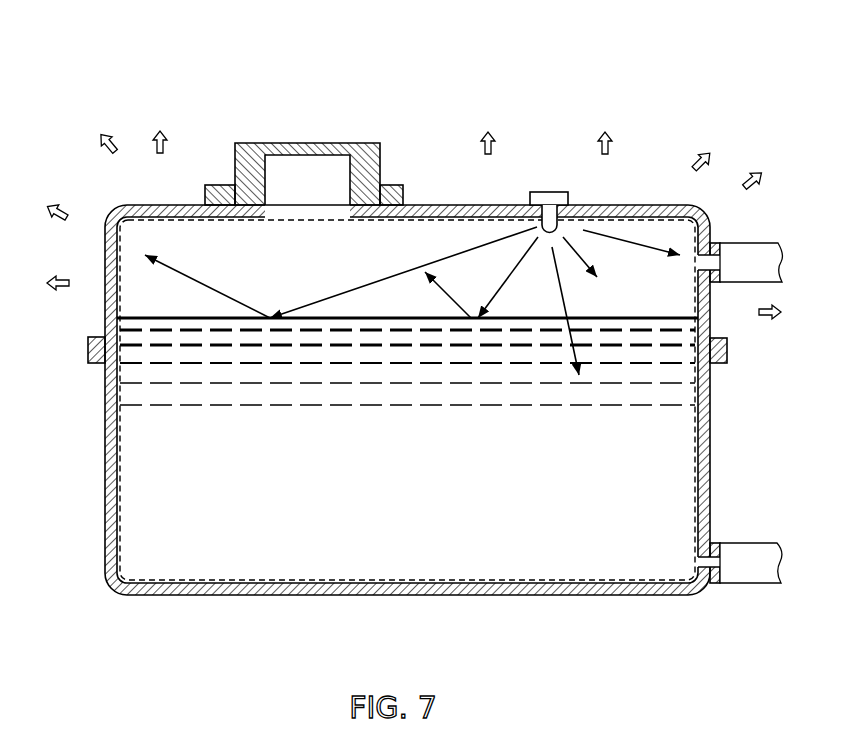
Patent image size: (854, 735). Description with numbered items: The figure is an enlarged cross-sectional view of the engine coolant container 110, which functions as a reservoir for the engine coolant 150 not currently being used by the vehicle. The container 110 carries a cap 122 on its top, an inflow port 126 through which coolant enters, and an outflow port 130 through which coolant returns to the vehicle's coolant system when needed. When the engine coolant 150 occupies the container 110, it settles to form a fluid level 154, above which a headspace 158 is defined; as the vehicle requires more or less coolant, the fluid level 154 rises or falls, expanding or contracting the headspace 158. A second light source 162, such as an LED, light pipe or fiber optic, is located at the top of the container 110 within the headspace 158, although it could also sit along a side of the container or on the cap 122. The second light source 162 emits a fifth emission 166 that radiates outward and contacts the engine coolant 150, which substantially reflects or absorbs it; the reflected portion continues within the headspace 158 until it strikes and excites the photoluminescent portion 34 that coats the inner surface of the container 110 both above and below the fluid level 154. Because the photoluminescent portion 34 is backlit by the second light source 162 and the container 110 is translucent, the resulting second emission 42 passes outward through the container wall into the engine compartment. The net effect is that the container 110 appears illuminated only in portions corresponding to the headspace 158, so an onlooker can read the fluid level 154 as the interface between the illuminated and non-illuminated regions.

The engine coolant container 110 is at (100, 85).
The second emission 42 is at (115, 145).
The photoluminescent portion 34 is at (118, 483).
The cap 122 is at (338, 143).
The inflow port 126 is at (755, 255).
The outflow port 130 is at (750, 553).
The engine coolant 150 is at (188, 452).
The fluid level 154 is at (624, 320).
The headspace 158 is at (198, 250).
The second light source 162 is at (546, 193).
The fifth emission 166 is at (515, 267).